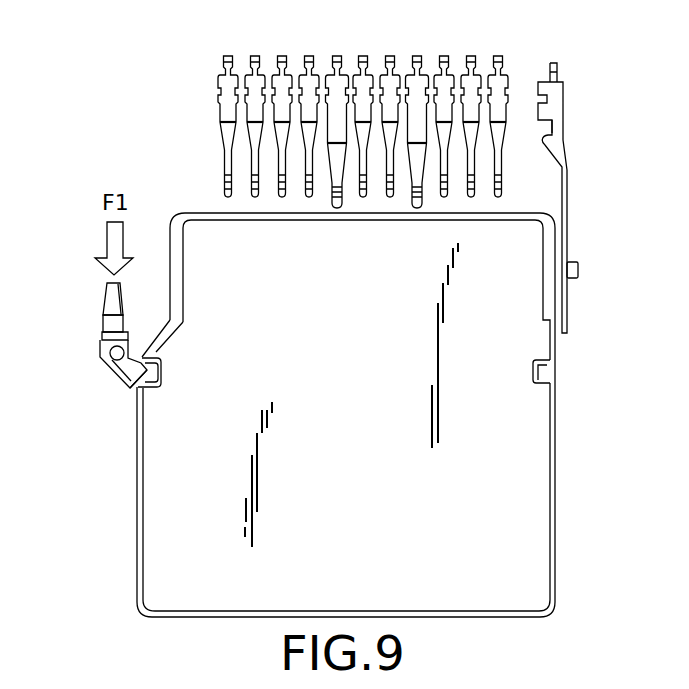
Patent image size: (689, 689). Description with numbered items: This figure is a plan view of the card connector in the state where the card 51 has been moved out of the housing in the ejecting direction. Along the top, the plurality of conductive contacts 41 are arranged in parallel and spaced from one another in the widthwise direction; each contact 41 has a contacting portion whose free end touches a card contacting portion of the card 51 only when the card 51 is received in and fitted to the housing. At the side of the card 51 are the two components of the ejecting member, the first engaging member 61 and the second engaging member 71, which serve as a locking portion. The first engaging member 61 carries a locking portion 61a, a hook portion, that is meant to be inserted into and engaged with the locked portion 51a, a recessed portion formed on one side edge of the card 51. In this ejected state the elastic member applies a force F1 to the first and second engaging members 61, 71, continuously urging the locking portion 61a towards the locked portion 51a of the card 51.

The conductive contacts 41 is at (255, 53).
The card 51 is at (557, 489).
The locked portion 51a is at (163, 368).
The first engaging member 61 is at (100, 363).
The locking portion 61a is at (125, 389).
The second engaging member 71 is at (104, 315).